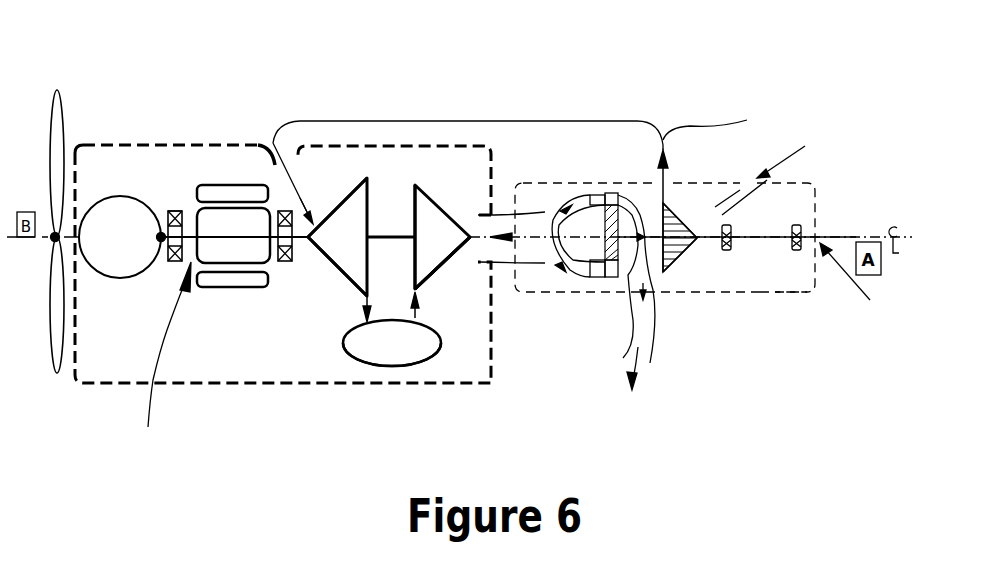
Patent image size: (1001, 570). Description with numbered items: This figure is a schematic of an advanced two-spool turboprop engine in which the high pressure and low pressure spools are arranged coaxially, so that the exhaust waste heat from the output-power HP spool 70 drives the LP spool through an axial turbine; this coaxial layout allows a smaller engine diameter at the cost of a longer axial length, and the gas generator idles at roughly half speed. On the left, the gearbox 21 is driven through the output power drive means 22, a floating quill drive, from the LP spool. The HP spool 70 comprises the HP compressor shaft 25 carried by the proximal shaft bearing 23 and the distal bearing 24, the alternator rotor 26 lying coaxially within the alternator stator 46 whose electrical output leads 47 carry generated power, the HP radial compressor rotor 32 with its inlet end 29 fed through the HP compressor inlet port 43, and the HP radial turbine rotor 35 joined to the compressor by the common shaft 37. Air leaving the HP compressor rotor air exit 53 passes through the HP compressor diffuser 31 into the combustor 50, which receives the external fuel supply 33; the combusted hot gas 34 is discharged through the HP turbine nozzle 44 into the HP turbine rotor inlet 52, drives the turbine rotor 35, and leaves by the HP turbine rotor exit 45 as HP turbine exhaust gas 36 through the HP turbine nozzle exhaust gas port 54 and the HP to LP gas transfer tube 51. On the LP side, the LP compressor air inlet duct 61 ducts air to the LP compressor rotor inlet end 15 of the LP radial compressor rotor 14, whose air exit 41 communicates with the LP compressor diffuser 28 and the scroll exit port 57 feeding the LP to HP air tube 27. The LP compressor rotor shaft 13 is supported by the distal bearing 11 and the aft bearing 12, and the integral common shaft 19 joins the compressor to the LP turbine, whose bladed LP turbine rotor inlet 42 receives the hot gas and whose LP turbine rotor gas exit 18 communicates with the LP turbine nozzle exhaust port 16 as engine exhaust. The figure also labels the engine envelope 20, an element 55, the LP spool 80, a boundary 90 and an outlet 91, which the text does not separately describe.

The distal bearing 11 is at (801, 224).
The aft bearing 12 is at (733, 224).
The LP compressor rotor shaft 13 is at (757, 240).
The LP radial compressor rotor 14 is at (678, 265).
The LP compressor rotor inlet end 15 is at (694, 242).
The LP turbine nozzle exhaust port 16 is at (642, 364).
The LP turbine rotor gas exit 18 is at (621, 208).
The integral common shaft 19 is at (657, 262).
The gas turbine engine 20 is at (136, 136).
The gearbox 21 is at (108, 277).
The output power drive means 22 is at (163, 247).
The proximal shaft bearing 23 is at (175, 208).
The distal bearing 24 is at (296, 263).
The HP compressor shaft 25 is at (191, 258).
The alternator rotor 26 is at (286, 263).
The LP to HP air tube 27 is at (361, 121).
The LP compressor diffuser 28 is at (717, 126).
The HP compressor rotor inlet end 29 is at (302, 275).
The HP compressor diffuser 31 is at (347, 273).
The HP radial compressor rotor 32 is at (302, 250).
The external fuel supply 33 is at (398, 367).
The combusted hot gas 34 is at (420, 300).
The HP radial turbine rotor 35 is at (437, 263).
The HP turbine exhaust gas 36 is at (513, 218).
The common shaft 37 is at (388, 234).
The LP compressor rotor air exit 41 is at (667, 277).
The LP turbine rotor inlet 42 is at (608, 196).
The HP compressor inlet port 43 is at (273, 165).
The HP turbine nozzle 44 is at (420, 298).
The HP turbine rotor exit 45 is at (472, 249).
The alternator stator 46 is at (218, 282).
The electrical output leads 47 is at (201, 282).
The combustor 50 is at (385, 360).
The HP to LP gas transfer tube 51 is at (533, 218).
The HP turbine rotor inlet 52 is at (420, 178).
The HP compressor rotor air exit 53 is at (366, 177).
The HP turbine nozzle exhaust gas port 54 is at (497, 234).
The turbine stator 55 is at (597, 196).
The LP compressor scroll exit port 57 is at (673, 182).
The LP compressor air inlet duct 61 is at (767, 180).
The HP spool 70 is at (143, 377).
The LP spool 80 is at (849, 304).
The LP module boundary 90 is at (766, 295).
The exhaust outlet 91 is at (665, 150).